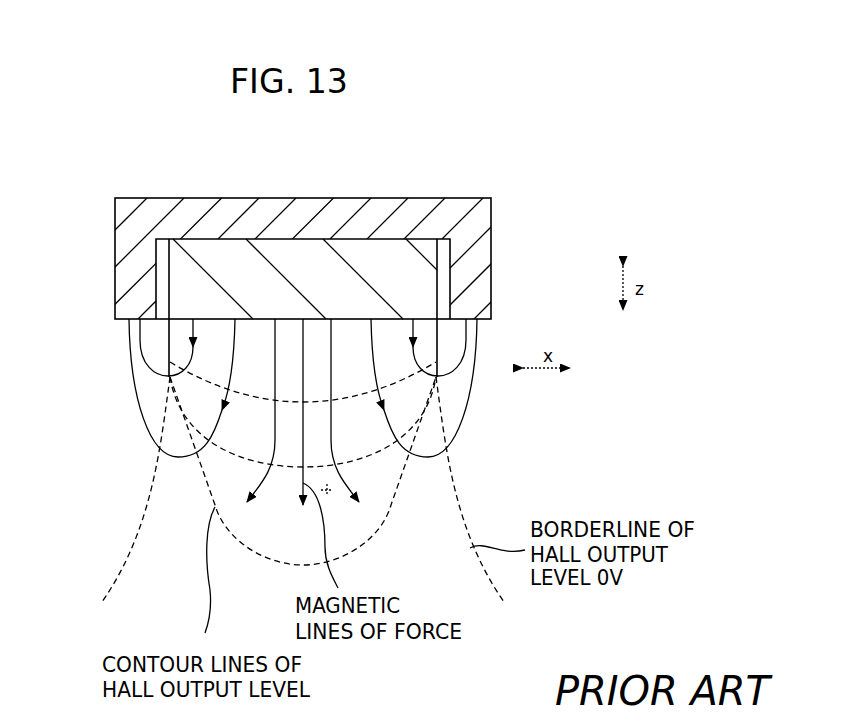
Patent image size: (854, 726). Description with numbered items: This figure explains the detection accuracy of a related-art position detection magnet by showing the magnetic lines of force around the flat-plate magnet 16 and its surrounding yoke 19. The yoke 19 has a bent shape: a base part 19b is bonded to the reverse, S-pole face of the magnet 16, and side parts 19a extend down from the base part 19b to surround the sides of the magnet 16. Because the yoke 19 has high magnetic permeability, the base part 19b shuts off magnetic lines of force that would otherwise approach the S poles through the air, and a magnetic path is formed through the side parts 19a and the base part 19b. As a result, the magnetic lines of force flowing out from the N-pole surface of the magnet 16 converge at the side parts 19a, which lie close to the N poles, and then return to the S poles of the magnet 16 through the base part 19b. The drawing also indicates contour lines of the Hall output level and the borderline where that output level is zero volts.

The yoke 19 is at (468, 218).
The side parts 19a is at (120, 303).
The base part 19b is at (330, 215).
The magnet 16 is at (427, 282).